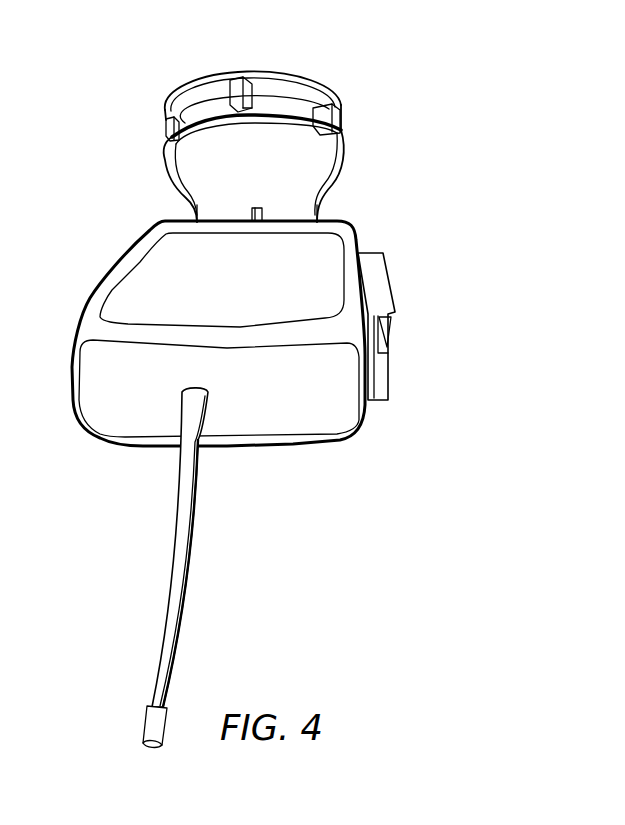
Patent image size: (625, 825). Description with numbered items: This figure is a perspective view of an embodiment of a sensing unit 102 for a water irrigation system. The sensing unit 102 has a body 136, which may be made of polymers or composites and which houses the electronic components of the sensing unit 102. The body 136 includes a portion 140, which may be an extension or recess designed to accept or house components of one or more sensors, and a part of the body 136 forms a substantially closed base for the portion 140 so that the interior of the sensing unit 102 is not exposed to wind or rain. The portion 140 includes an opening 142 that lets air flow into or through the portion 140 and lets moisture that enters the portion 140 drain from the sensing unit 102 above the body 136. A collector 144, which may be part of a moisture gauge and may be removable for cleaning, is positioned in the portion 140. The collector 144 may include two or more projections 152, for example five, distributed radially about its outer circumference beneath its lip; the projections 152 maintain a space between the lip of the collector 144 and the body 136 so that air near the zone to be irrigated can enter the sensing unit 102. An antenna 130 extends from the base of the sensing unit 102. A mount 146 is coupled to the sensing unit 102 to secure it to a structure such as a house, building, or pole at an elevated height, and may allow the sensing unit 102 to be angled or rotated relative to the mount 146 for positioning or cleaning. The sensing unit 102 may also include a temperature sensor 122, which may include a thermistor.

The sensing unit 102 is at (129, 163).
The temperature sensor 122 is at (343, 148).
The antenna 130 is at (184, 525).
The body 136 is at (198, 295).
The portion 140 is at (305, 193).
The opening 142 is at (252, 213).
The collector 144 is at (293, 92).
The mount 146 is at (380, 288).
The projections 152 is at (323, 118).